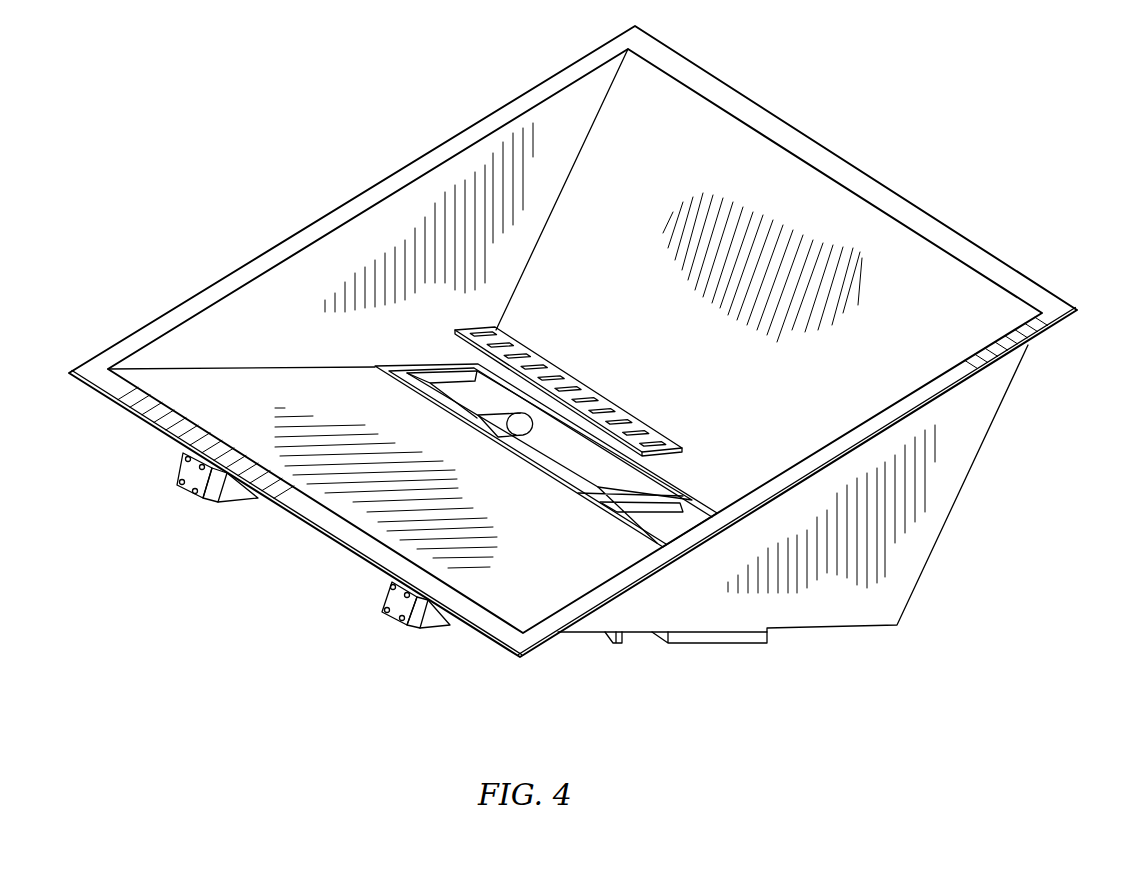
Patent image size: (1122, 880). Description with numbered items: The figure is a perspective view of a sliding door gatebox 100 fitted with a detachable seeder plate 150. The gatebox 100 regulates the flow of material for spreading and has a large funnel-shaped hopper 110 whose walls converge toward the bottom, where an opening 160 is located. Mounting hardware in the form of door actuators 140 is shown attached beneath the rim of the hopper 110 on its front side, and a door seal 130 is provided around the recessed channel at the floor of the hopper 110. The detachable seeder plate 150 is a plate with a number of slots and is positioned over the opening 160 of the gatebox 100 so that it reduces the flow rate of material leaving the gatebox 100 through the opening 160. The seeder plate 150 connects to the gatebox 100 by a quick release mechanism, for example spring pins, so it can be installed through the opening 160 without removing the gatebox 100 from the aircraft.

The sliding door gatebox 100 is at (1028, 132).
The hopper 110 is at (408, 163).
The door seal 130 is at (447, 405).
The door actuator 140 is at (230, 498).
The detachable seeder plate 150 is at (580, 385).
The opening 160 is at (588, 473).